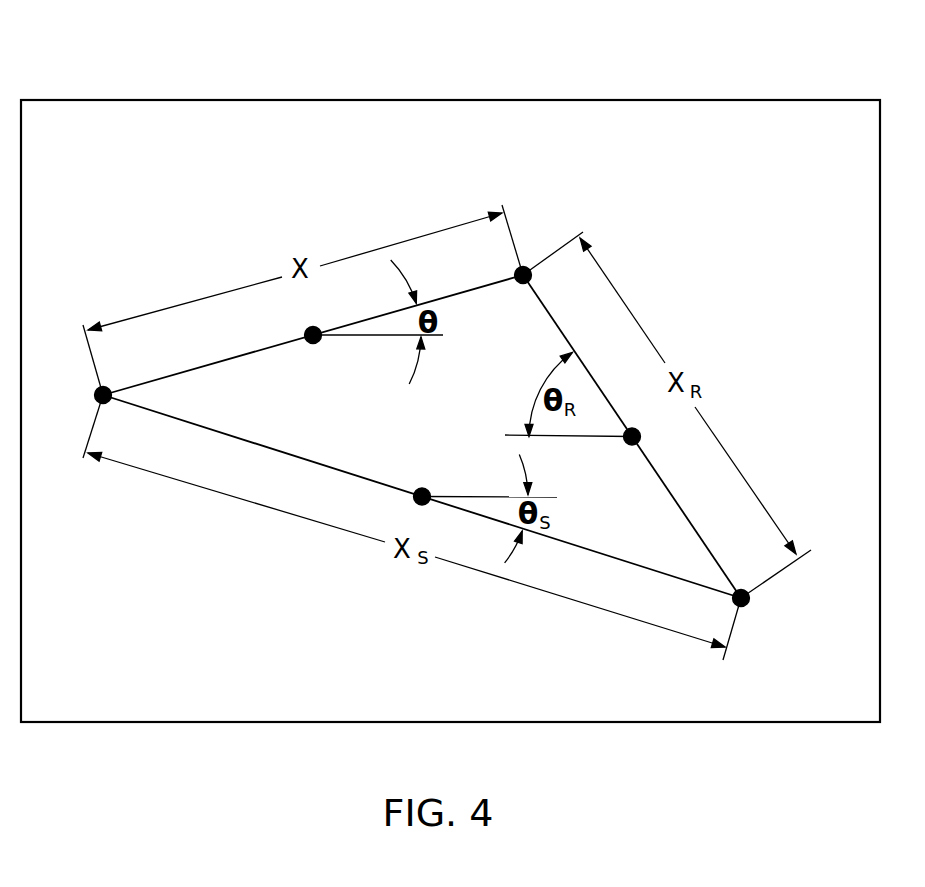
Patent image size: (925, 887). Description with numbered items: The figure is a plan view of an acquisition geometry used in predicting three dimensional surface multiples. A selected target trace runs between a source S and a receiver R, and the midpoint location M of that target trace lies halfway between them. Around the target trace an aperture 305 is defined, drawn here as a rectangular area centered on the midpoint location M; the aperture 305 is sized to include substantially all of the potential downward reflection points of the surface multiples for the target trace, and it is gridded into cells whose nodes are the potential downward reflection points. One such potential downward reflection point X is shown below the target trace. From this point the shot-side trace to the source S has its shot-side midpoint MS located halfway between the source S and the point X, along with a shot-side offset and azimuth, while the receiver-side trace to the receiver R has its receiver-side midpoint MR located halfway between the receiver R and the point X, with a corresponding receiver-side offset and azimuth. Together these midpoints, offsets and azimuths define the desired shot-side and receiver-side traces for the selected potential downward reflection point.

The aperture 305 is at (759, 99).
The source S is at (90, 396).
The receiver R is at (528, 256).
The potential downward reflection point X is at (755, 609).
The midpoint location of the target trace M is at (372, 319).
The receiver-side midpoint MR is at (591, 438).
The shot-side midpoint MS is at (486, 481).